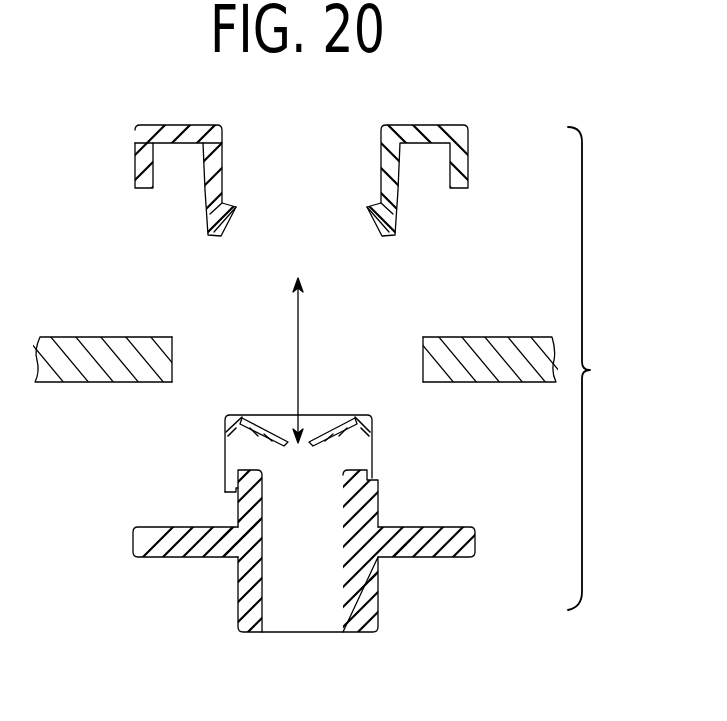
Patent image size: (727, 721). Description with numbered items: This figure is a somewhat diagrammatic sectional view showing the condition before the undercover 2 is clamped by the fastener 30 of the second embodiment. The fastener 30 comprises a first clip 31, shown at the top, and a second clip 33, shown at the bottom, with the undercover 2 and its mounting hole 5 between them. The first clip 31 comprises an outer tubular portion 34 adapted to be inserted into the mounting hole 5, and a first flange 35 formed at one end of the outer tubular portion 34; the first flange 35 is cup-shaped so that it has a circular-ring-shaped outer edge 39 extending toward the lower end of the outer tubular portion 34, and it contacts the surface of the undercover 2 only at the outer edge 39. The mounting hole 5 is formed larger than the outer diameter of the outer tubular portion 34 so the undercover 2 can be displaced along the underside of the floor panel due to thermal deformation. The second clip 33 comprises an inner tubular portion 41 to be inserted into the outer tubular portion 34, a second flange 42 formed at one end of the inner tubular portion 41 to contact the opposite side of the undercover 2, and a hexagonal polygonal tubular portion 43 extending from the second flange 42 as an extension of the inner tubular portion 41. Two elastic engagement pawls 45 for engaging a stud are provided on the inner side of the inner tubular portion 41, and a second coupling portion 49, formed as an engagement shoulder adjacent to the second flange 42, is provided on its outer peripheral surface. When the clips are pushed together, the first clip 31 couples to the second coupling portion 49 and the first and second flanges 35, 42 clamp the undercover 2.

The undercover 2 is at (297, 332).
The mounting hole 5 is at (175, 353).
The fastener 30 is at (350, 385).
The first clip 31 is at (470, 153).
The second clip 33 is at (313, 524).
The outer tubular portion 34 is at (205, 197).
The first flange 35 is at (137, 130).
The outer edge 39 is at (135, 188).
The inner tubular portion 41 is at (328, 430).
The second flange 42 is at (132, 541).
The polygonal tubular portion 43 is at (228, 615).
The elastic engagement pawls 45 is at (250, 432).
The second coupling portion 49 is at (228, 492).